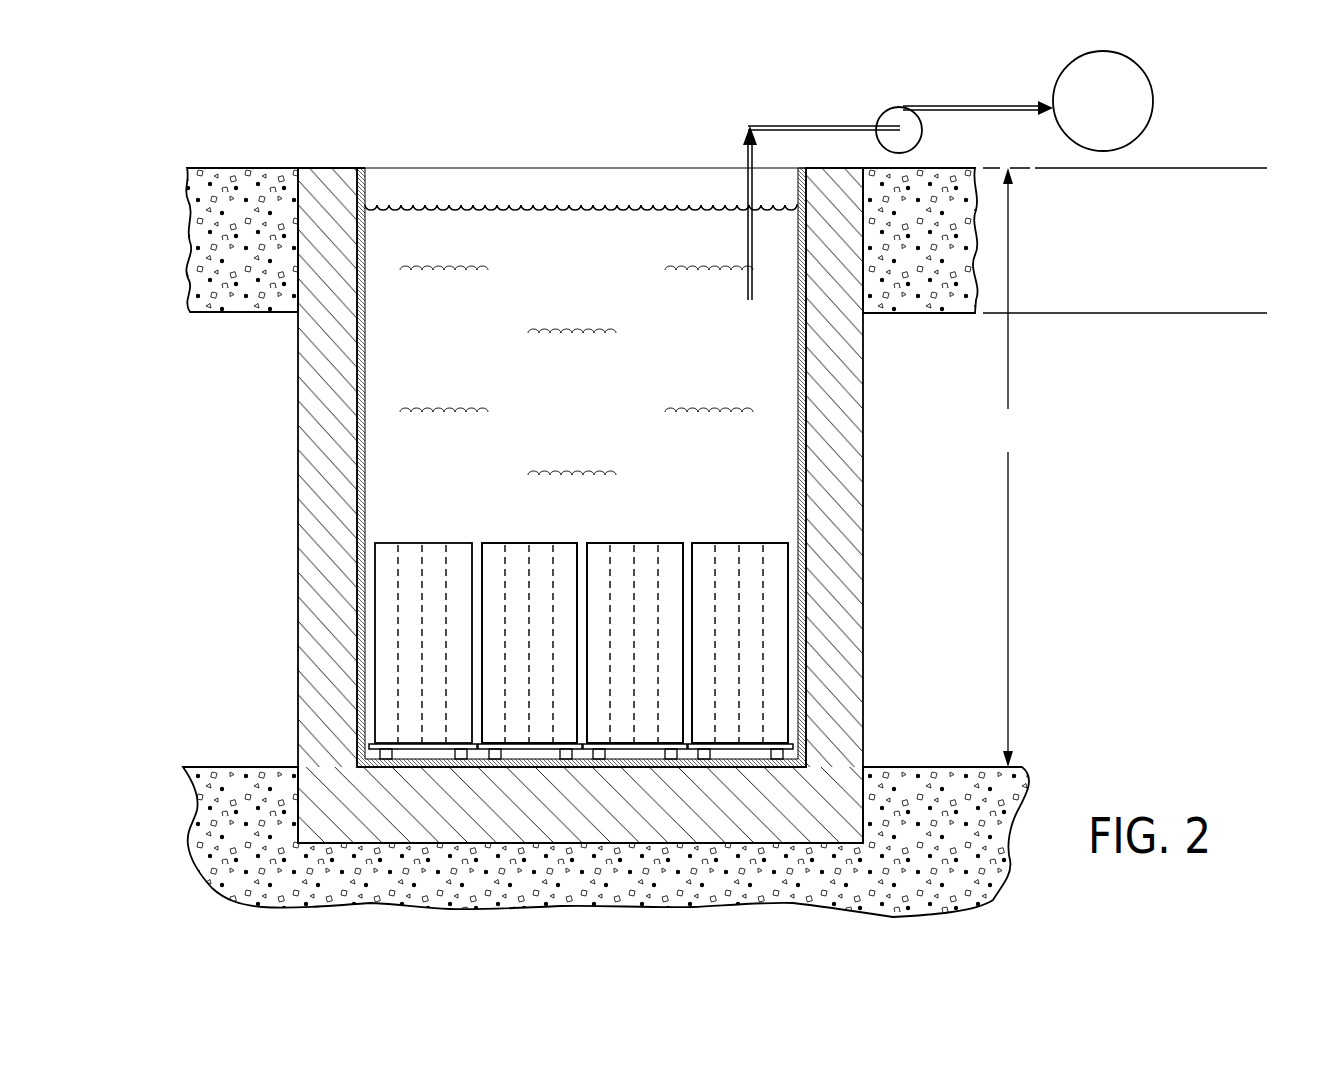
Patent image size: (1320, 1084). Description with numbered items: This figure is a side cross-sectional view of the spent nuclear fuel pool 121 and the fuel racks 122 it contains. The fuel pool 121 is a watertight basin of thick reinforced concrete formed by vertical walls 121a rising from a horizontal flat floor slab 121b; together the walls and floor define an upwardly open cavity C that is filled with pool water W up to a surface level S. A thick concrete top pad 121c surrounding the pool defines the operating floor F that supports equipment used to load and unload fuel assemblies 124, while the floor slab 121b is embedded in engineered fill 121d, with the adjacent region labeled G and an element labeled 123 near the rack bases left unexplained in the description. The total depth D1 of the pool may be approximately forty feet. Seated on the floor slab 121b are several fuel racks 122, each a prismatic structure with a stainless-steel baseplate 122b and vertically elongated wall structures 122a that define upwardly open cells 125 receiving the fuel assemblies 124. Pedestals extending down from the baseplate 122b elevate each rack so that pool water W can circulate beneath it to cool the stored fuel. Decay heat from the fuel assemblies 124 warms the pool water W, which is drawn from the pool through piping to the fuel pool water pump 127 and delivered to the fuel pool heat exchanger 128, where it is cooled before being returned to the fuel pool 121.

The spent nuclear fuel pool 121 is at (754, 104).
The vertical walls 121a is at (327, 500).
The floor slab 121b is at (523, 805).
The concrete top pad 121c is at (275, 200).
The engineered fill 121d is at (238, 880).
The fuel racks 122 is at (512, 529).
The wall structures 122a is at (788, 625).
The baseplate 122b is at (645, 749).
The base plate 123 is at (597, 752).
The fuel assemblies 124 is at (623, 580).
The open cells 125 is at (514, 581).
The fuel pool water pump 127 is at (898, 107).
The fuel pool heat exchanger 128 is at (1152, 89).
The operating floor F is at (256, 166).
The ground G is at (240, 767).
The cavity C is at (365, 398).
The surface level S is at (595, 198).
The pool water W is at (584, 389).
The total depth D1 is at (1125, 467).